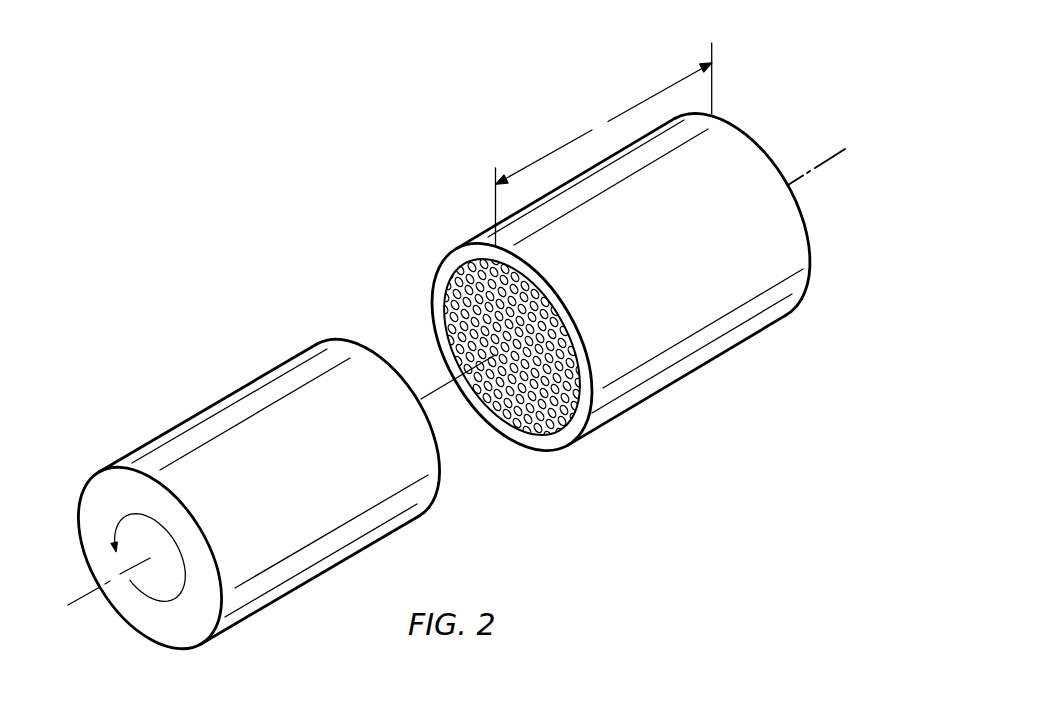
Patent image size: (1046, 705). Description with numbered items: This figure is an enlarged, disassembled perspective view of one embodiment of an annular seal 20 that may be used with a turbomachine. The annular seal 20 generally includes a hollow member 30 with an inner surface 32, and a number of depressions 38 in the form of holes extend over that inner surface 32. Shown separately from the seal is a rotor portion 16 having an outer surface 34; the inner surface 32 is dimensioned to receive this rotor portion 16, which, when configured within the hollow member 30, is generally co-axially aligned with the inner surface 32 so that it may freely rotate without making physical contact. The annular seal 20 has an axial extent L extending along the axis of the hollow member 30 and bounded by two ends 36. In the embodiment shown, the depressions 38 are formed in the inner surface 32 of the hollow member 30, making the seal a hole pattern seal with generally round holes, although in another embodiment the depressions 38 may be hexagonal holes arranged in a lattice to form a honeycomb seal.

The rotor portion 16 is at (221, 400).
The annular seal 20 is at (616, 260).
The hollow member 30 is at (713, 356).
The inner surface 32 is at (535, 440).
The outer surface 34 is at (342, 562).
The ends 36 is at (440, 268).
The depressions 38 is at (500, 421).